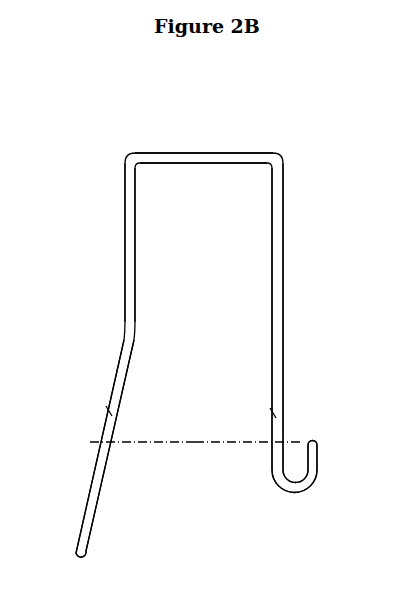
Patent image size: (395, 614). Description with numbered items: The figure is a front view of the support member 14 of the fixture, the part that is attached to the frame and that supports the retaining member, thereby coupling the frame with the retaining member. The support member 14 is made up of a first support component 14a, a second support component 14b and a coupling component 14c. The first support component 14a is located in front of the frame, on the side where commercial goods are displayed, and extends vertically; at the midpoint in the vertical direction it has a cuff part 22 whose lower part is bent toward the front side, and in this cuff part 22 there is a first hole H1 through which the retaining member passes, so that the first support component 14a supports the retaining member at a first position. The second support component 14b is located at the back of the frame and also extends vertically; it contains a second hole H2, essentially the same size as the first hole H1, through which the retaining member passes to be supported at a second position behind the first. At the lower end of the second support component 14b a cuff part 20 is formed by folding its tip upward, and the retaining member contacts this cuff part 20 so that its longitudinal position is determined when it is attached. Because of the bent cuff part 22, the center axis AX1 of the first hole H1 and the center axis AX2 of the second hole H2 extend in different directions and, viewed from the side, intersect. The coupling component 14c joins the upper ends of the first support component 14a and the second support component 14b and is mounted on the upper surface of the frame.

The support member 14 is at (114, 140).
The first support component 14a is at (125, 290).
The second support component 14b is at (283, 290).
The coupling component 14c is at (237, 153).
The cuff part 20 is at (318, 456).
The cuff part 22 is at (79, 532).
The first hole H1 is at (110, 412).
The second hole H2 is at (273, 414).
The center axis of the first hole AX1 is at (78, 434).
The center axis of the second hole AX2 is at (247, 430).